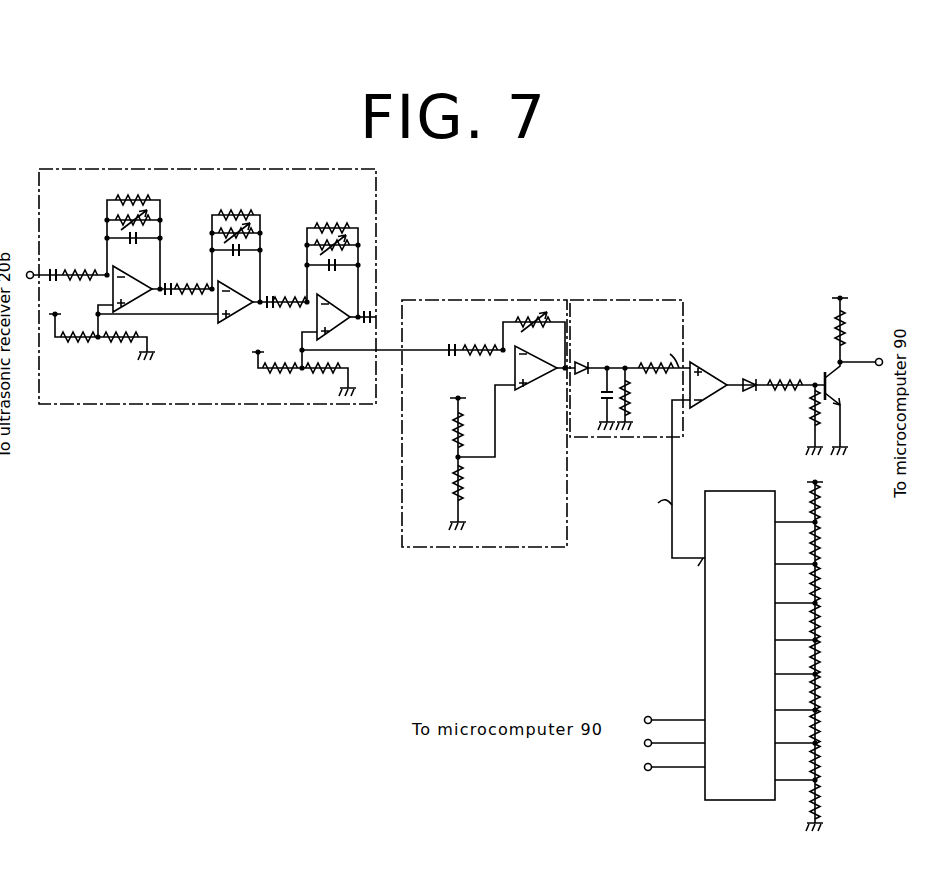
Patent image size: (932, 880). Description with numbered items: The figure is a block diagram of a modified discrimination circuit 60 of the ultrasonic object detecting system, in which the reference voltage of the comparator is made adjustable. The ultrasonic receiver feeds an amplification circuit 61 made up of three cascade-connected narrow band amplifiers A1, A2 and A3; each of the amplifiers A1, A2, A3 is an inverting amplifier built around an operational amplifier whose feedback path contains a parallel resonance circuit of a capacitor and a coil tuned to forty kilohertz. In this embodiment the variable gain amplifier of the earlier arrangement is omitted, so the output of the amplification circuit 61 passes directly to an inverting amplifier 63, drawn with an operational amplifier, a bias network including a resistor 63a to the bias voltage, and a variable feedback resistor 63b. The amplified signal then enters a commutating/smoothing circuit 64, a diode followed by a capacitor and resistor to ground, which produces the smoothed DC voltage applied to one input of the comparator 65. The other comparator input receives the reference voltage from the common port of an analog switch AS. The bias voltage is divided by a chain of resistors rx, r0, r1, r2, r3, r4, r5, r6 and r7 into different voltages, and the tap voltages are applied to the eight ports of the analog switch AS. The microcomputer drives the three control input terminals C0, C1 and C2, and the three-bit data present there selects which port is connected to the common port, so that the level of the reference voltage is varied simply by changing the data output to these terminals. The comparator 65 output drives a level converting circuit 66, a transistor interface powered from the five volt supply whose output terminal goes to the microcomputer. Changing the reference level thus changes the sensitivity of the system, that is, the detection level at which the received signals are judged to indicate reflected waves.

The discrimination circuit 60 is at (253, 466).
The amplification circuit 61 is at (240, 170).
The narrow band amplifier A1 is at (87, 228).
The narrow band amplifier A2 is at (206, 228).
The narrow band amplifier A3 is at (300, 233).
The inverting amplifier 63 is at (458, 300).
The bias resistor 63a is at (462, 464).
The variable feedback resistor 63b is at (502, 346).
The commutating/smoothing circuit 64 is at (618, 300).
The comparator 65 is at (716, 397).
The level converting circuit 66 is at (814, 392).
The analog switch AS is at (733, 491).
The control input terminal C0 is at (675, 713).
The control input terminal C1 is at (675, 736).
The control input terminal C2 is at (675, 760).
The resistor r7 is at (827, 502).
The resistor r6 is at (827, 543).
The resistor r5 is at (827, 583).
The resistor r4 is at (827, 621).
The resistor r3 is at (827, 657).
The resistor r2 is at (827, 692).
The resistor r1 is at (827, 726).
The resistor r0 is at (827, 761).
The resistor rx is at (826, 801).